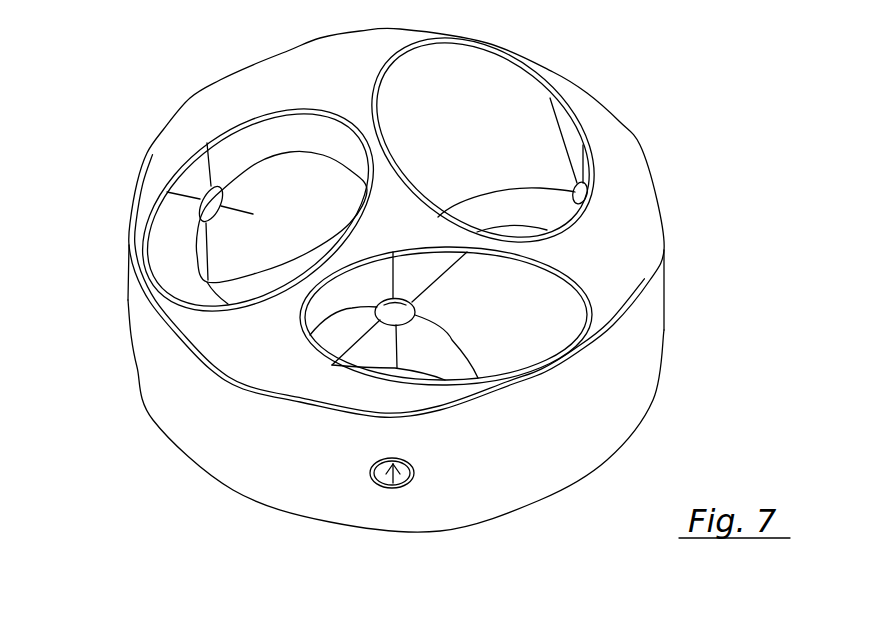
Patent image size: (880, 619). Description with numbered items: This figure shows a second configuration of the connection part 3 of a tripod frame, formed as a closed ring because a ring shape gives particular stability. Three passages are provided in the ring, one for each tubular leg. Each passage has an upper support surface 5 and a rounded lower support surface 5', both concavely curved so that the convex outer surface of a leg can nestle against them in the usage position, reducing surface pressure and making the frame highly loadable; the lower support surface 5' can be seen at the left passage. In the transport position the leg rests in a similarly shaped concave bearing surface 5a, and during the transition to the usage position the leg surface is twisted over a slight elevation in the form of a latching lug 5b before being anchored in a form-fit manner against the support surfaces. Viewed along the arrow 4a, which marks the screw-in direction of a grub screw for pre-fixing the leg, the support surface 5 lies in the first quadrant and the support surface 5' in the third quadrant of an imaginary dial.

The connection part 3 is at (617, 120).
The upper support surface 5 is at (394, 193).
The lower support surface 5' is at (268, 155).
The concave bearing surface 5a is at (332, 296).
The latching lug 5b is at (192, 183).
The arrow 4a is at (392, 487).